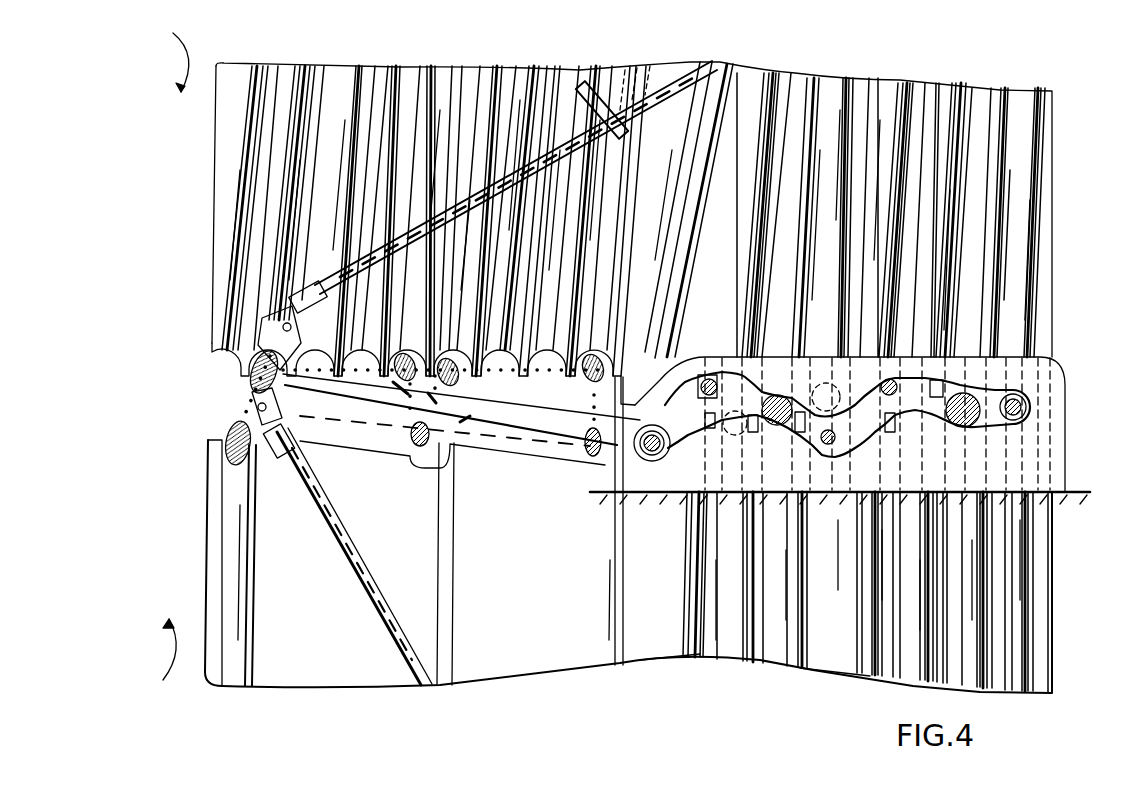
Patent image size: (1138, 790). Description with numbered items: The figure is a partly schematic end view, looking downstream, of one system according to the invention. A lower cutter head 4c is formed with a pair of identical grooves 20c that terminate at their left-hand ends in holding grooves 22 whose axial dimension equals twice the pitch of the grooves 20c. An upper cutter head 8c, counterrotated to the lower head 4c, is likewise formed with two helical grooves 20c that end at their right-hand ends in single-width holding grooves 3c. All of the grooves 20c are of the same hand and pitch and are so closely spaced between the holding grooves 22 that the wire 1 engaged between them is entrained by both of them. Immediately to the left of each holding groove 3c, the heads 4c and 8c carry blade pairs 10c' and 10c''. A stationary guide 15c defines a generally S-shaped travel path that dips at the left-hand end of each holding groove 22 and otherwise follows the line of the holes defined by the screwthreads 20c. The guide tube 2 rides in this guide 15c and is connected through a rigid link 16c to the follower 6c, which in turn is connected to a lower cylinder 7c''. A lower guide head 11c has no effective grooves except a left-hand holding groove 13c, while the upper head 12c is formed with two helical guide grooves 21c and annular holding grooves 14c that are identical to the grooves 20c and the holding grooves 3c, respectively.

The wire 1 is at (652, 460).
The guide tube 2 is at (680, 457).
The holding grooves 3c is at (665, 75).
The lower cutter head 4c is at (1053, 557).
The follower 6c is at (250, 380).
The lower cylinder 7c'' is at (347, 554).
The upper cutter head 8c is at (1053, 160).
The blade pair 10c' is at (768, 470).
The blade pair 10c'' is at (953, 368).
The lower guide head 11c is at (207, 553).
The upper head 12c is at (210, 237).
The holding groove 13c is at (237, 500).
The annular holding grooves 14c is at (417, 90).
The stationary guide 15c is at (1020, 377).
The rigid link 16c is at (363, 387).
The helical grooves 20c is at (713, 107).
The helical guide grooves 21c is at (333, 103).
The holding grooves 22 is at (662, 643).